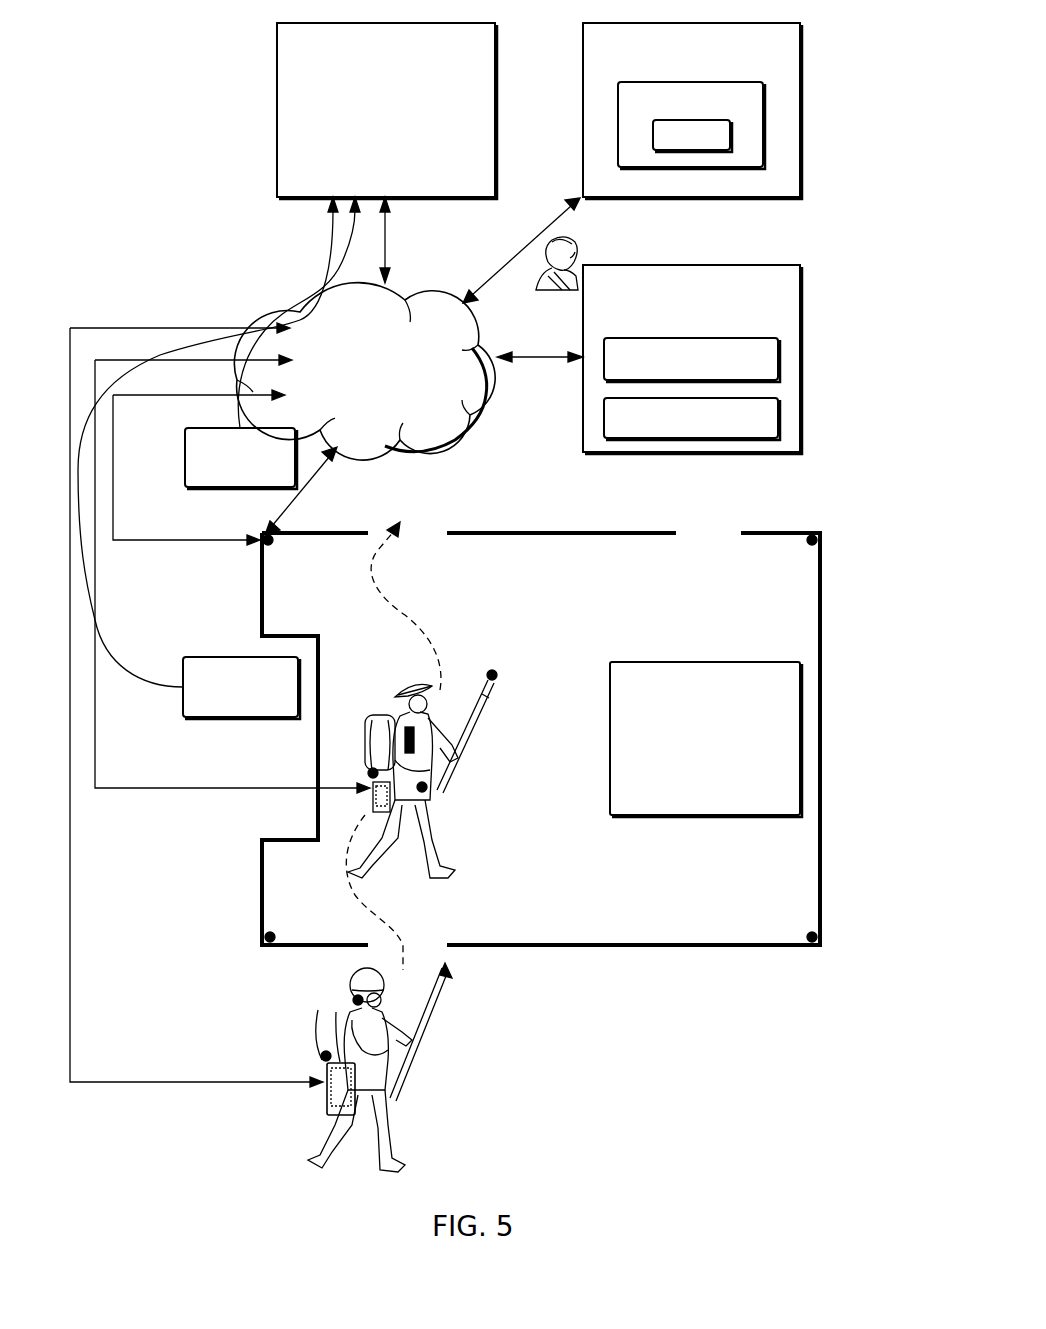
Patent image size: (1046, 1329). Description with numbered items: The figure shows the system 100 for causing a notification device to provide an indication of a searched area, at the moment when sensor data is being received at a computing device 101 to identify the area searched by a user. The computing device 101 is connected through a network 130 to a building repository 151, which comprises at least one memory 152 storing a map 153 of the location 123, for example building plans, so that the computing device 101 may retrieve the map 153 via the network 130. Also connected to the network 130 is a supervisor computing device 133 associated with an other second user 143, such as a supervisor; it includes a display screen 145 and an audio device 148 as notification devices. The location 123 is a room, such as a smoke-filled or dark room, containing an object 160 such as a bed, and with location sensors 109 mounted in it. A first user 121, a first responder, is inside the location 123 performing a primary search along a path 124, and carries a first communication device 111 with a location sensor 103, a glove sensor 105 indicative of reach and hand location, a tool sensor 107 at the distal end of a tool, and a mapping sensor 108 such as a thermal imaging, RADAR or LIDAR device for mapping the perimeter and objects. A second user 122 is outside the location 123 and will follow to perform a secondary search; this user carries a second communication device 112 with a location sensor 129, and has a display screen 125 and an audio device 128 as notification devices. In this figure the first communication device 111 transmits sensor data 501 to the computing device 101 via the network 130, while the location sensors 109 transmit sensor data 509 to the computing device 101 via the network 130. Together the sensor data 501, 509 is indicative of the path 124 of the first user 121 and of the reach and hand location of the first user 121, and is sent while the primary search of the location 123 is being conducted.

The system 100 is at (152, 40).
The computing device 101 is at (277, 108).
The location sensor 103 is at (368, 771).
The glove sensor 105 is at (428, 788).
The tool sensor 107 is at (497, 677).
The mapping sensor 108 is at (416, 741).
The location sensors 109 is at (272, 545).
The first communication device 111 is at (372, 800).
The second communication device 112 is at (327, 1108).
The first user 121 is at (455, 877).
The second user 122 is at (417, 1163).
The location 123 is at (822, 870).
The path 124 is at (378, 574).
The display screen 125 is at (393, 997).
The audio device 128 is at (353, 1000).
The location sensor 129 is at (321, 1055).
The network 130 is at (310, 300).
The supervisor computing device 133 is at (800, 294).
The other second user 143 is at (577, 249).
The display screen 145 is at (778, 358).
The audio device 148 is at (778, 417).
The building repository 151 is at (583, 83).
The memory 152 is at (618, 136).
The map 153 is at (685, 152).
The object 160 is at (705, 816).
The sensor data 501 is at (215, 657).
The sensor data 509 is at (185, 462).